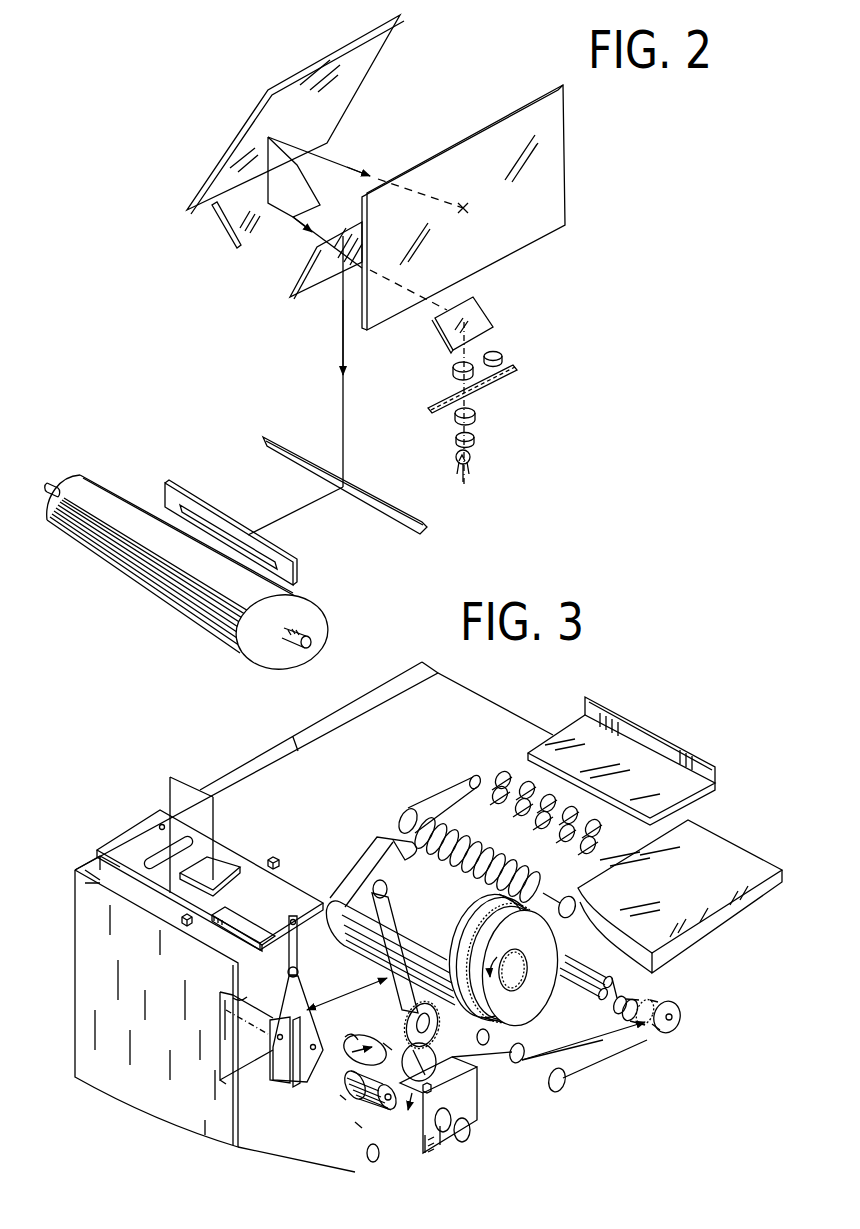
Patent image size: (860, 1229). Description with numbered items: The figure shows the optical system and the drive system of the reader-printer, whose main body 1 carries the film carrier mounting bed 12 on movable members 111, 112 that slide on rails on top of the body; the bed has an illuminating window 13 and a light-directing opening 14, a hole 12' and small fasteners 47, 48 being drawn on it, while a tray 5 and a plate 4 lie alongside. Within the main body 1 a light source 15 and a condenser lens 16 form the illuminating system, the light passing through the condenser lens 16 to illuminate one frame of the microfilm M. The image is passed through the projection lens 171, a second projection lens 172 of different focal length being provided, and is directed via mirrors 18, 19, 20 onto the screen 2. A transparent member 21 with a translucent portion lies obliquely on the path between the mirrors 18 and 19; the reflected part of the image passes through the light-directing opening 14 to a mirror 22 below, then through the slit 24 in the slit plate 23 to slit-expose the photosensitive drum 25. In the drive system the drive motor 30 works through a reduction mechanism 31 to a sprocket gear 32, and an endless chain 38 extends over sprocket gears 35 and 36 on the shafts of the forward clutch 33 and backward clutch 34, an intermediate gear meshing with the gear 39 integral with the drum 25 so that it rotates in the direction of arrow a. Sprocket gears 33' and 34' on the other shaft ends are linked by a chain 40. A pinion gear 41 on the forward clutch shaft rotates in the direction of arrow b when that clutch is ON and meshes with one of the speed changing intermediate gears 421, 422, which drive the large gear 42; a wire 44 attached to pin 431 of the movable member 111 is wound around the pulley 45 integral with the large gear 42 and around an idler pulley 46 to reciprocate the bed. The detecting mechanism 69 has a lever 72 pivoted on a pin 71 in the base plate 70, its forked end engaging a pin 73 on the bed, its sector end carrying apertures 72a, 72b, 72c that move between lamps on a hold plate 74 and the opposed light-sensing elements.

In FIG. 3, the main body 1 is at (80, 1037).
In FIG. 2, the screen 2 is at (557, 157).
In FIG. 3, the plate 4 is at (725, 852).
In FIG. 3, the tray 5 is at (650, 760).
In FIG. 3, the film carrier mounting bed 12 is at (210, 852).
In FIG. 3, the hole 12' is at (126, 817).
In FIG. 3, the illuminating window 13 is at (157, 867).
In FIG. 3, the light-directing opening 14 is at (220, 877).
In FIG. 2, the light source 15 is at (471, 457).
In FIG. 2, the condenser lens 16 is at (490, 402).
In FIG. 2, the projection lens 171 is at (452, 366).
In FIG. 2, the projection lens 172 is at (500, 349).
In FIG. 2, the microfilm M is at (518, 363).
In FIG. 2, the mirror 18 is at (478, 305).
In FIG. 2, the mirror 19 is at (230, 228).
In FIG. 2, the mirror 20 is at (208, 195).
In FIG. 2, the transparent member 21 is at (308, 283).
In FIG. 2, the mirror 22 is at (430, 526).
In FIG. 2, the slit plate 23 is at (192, 492).
In FIG. 2, the slit 24 is at (263, 550).
In FIG. 2, the photosensitive drum 25 is at (195, 617).
In FIG. 3, the photosensitive drum 25 is at (353, 951).
In FIG. 3, the drive motor 30 is at (393, 1037).
In FIG. 3, the reduction mechanism 31 is at (448, 1140).
In FIG. 3, the sprocket gear 32 is at (470, 1133).
In FIG. 3, the forward clutch 33 is at (370, 1109).
In FIG. 3, the sprocket gear 33' is at (369, 1023).
In FIG. 3, the backward clutch 34 is at (340, 1144).
In FIG. 3, the sprocket gear 34' is at (324, 1116).
In FIG. 3, the sprocket gear 35 is at (442, 1145).
In FIG. 3, the sprocket gear 36 is at (376, 1161).
In FIG. 3, the endless chain 38 is at (491, 1036).
In FIG. 3, the gear 39 is at (537, 983).
In FIG. 3, the chain 40 is at (357, 1040).
In FIG. 3, the pinion gear 41 is at (431, 1092).
In FIG. 3, the large gear 42 is at (423, 1015).
In FIG. 3, the speed changing intermediate gear 421 is at (460, 1062).
In FIG. 3, the speed changing intermediate gear 422 is at (436, 1061).
In FIG. 3, the pin 431 is at (372, 853).
In FIG. 3, the wire 44 is at (397, 910).
In FIG. 3, the pulley 45 is at (473, 1000).
In FIG. 3, the idler pulley 46 is at (389, 887).
In FIG. 3, the screw 47 is at (183, 930).
In FIG. 3, the screw 48 is at (278, 862).
In FIG. 3, the detecting mechanism 69 is at (366, 999).
In FIG. 3, the base plate 70 is at (233, 998).
In FIG. 3, the pin 71 is at (288, 977).
In FIG. 3, the lever 72 is at (223, 1067).
In FIG. 3, the light-transmitting aperture 72a is at (308, 1062).
In FIG. 3, the light-transmitting aperture 72b is at (278, 1073).
In FIG. 3, the light-transmitting aperture 72c is at (230, 1087).
In FIG. 3, the pin 73 is at (290, 917).
In FIG. 3, the hold plate 74 is at (290, 1087).
In FIG. 3, the movable member 111 is at (220, 943).
In FIG. 3, the movable member 112 is at (83, 883).
In FIG. 3, the arrow a is at (504, 949).
In FIG. 3, the arrow b is at (410, 1114).